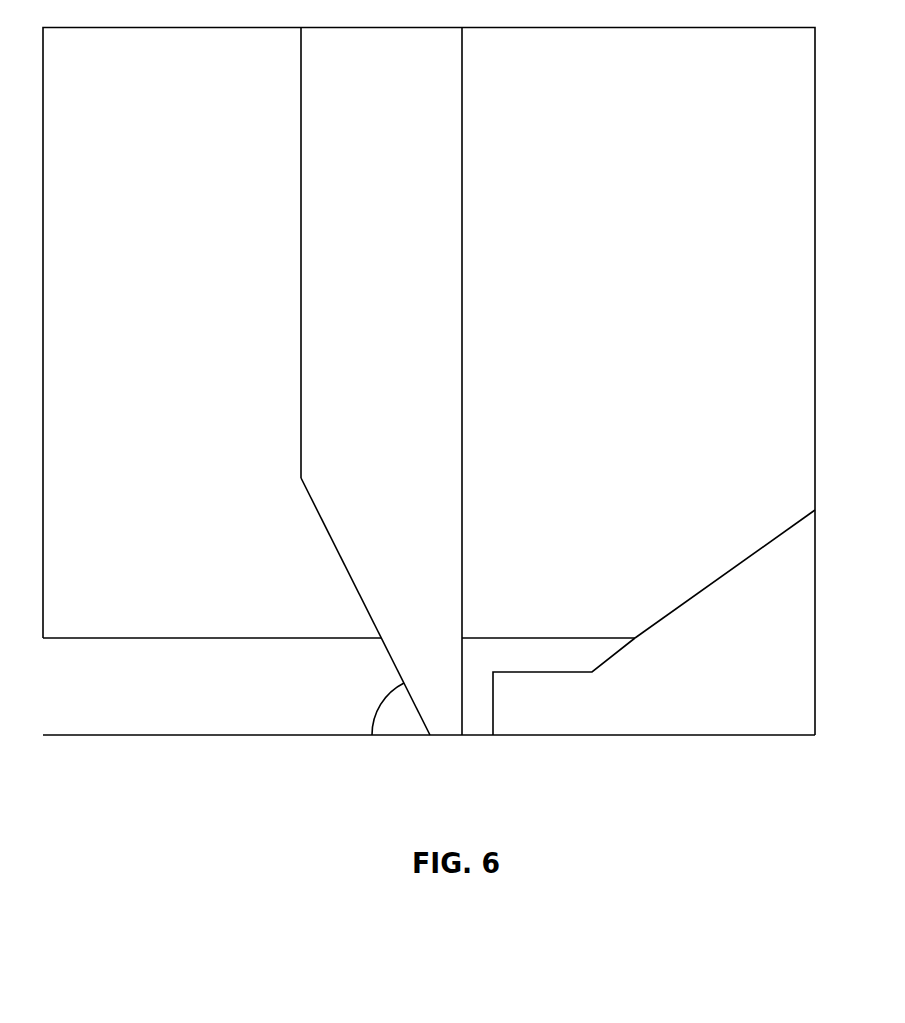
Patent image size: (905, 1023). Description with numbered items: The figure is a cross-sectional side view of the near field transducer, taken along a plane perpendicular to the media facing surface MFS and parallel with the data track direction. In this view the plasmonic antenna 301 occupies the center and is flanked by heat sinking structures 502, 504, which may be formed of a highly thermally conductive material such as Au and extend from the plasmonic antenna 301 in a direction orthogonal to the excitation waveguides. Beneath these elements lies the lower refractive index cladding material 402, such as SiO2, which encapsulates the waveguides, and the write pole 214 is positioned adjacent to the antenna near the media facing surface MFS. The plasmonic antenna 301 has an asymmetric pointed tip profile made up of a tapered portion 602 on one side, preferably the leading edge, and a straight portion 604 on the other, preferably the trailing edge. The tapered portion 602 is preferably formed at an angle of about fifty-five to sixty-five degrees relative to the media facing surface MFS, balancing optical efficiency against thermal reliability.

The heat sinking structure 502 is at (195, 250).
The heat sinking structure 504 is at (677, 252).
The plasmonic antenna 301 is at (407, 413).
The tapered portion 602 is at (358, 590).
The straight portion 604 is at (462, 560).
The cladding material 402 is at (212, 680).
The write pole 214 is at (668, 680).
The media facing surface MFS is at (605, 735).